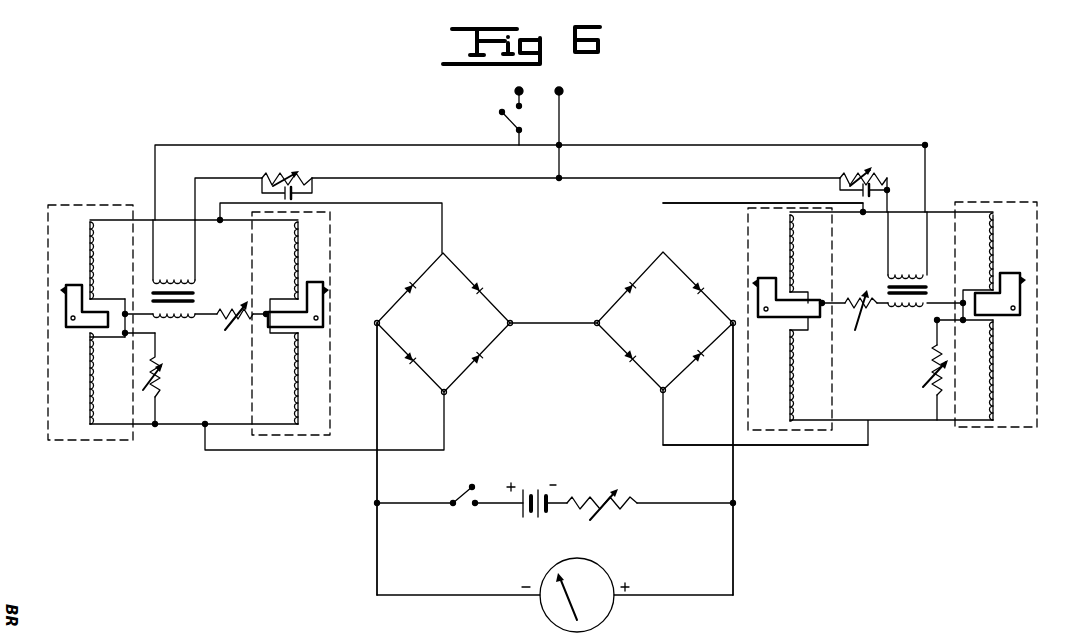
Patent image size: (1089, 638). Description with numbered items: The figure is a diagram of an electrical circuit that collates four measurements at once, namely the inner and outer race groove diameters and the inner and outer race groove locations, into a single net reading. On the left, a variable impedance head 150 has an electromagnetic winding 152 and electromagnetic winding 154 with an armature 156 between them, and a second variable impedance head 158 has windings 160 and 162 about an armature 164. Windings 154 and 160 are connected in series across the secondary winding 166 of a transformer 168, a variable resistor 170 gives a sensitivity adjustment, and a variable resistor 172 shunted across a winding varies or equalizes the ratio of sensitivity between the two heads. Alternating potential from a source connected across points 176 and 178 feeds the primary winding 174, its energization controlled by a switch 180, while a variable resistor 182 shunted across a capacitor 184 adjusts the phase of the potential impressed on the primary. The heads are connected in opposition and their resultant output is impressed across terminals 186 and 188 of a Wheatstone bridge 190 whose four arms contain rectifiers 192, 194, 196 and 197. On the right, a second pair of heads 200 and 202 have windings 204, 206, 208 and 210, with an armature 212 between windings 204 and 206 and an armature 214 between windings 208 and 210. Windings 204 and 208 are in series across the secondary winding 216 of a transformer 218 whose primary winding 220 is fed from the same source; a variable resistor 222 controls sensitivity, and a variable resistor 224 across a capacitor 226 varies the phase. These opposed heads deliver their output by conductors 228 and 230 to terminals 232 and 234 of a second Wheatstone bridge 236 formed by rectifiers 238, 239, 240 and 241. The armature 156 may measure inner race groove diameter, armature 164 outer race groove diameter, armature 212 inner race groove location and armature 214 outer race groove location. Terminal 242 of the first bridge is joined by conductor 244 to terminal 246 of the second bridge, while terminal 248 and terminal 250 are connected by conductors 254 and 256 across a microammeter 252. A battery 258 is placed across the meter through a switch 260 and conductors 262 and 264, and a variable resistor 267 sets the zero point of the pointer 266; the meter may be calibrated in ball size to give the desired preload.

The variable impedance head 150 is at (86, 446).
The electromagnetic winding 152 is at (86, 385).
The electromagnetic winding 154 is at (87, 250).
The armature 156 is at (83, 329).
The second variable impedance head 158 is at (338, 254).
The winding 160 is at (296, 266).
The winding 162 is at (296, 383).
The armature 164 is at (325, 307).
The secondary winding 166 is at (187, 320).
The transformer 168 is at (199, 293).
The variable resistor 170 is at (235, 328).
The variable resistor 172 is at (160, 382).
The primary winding 174 is at (168, 275).
The point 176 is at (522, 92).
The point 178 is at (563, 93).
The switch 180 is at (500, 116).
The variable resistor 182 is at (305, 177).
The capacitor 184 is at (295, 196).
The terminal 186 is at (447, 255).
The terminal 188 is at (448, 393).
The Wheatstone bridge 190 is at (489, 291).
The rectifier 192 is at (417, 288).
The rectifier 194 is at (474, 292).
The rectifier 196 is at (415, 355).
The rectifier 197 is at (476, 352).
The variable impedance head 200 is at (806, 450).
The variable impedance head 202 is at (1043, 372).
The winding 204 is at (793, 272).
The winding 206 is at (795, 370).
The winding 208 is at (996, 250).
The winding 210 is at (996, 392).
The armature 212 is at (783, 322).
The armature 214 is at (1022, 304).
The secondary winding 216 is at (907, 312).
The transformer 218 is at (933, 287).
The primary winding 220 is at (906, 270).
The variable resistor 222 is at (862, 320).
The variable resistor 224 is at (872, 176).
The capacitor 226 is at (865, 200).
The conductor 228 is at (708, 208).
The conductor 230 is at (676, 445).
The terminal 232 is at (661, 253).
The terminal 234 is at (661, 393).
The second Wheatstone bridge 236 is at (620, 355).
The rectifier 238 is at (636, 291).
The rectifier 239 is at (636, 355).
The rectifier 240 is at (699, 350).
The rectifier 241 is at (696, 294).
The terminal 242 is at (512, 320).
The conductor 244 is at (548, 326).
The terminal 246 is at (596, 320).
The terminal 248 is at (376, 326).
The terminal 250 is at (734, 318).
The microammeter 252 is at (606, 566).
The conductor 254 is at (376, 546).
The conductor 256 is at (735, 546).
The battery 258 is at (532, 486).
The switch 260 is at (466, 510).
The conductor 262 is at (413, 502).
The conductor 264 is at (683, 500).
The pointer 266 is at (560, 604).
The variable resistor 267 is at (594, 495).